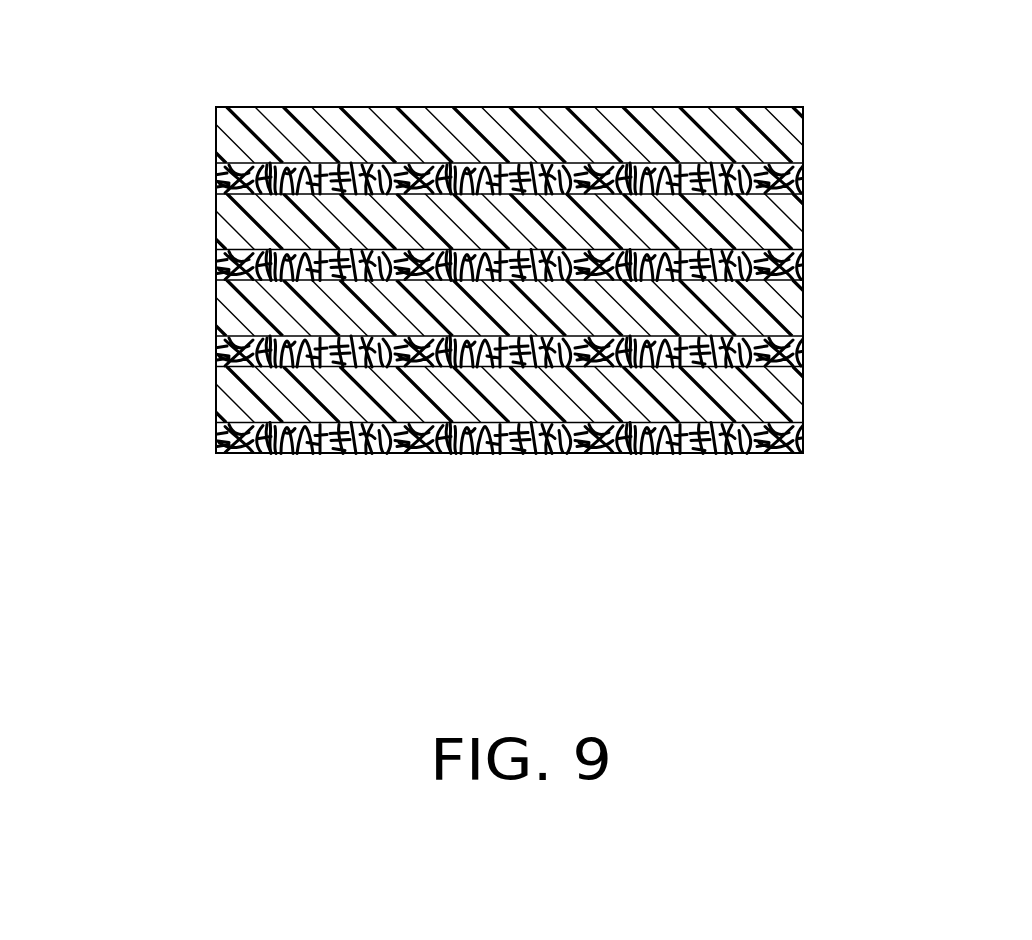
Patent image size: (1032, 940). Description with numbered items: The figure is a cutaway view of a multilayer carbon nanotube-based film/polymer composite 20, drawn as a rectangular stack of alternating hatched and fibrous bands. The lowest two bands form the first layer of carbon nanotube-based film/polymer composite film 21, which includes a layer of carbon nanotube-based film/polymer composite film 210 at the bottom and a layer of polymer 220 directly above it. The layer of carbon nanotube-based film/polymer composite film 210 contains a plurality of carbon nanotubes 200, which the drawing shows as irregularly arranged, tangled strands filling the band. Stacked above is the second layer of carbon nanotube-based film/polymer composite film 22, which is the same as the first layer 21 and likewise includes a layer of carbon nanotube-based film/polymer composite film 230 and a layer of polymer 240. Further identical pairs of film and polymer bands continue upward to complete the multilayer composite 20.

The multilayer carbon nanotube-based film/polymer composite 20 is at (454, 40).
The carbon nanotubes 200 is at (803, 440).
The first layer of carbon nanotube-based film/polymer composite film 21 is at (100, 387).
The layer of carbon nanotube-based film/polymer composite film 210 is at (217, 438).
The layer of polymer 220 is at (243, 402).
The second layer of carbon nanotube-based film/polymer composite film 22 is at (94, 297).
The layer of carbon nanotube-based film/polymer composite film 230 is at (217, 352).
The layer of polymer 240 is at (240, 317).